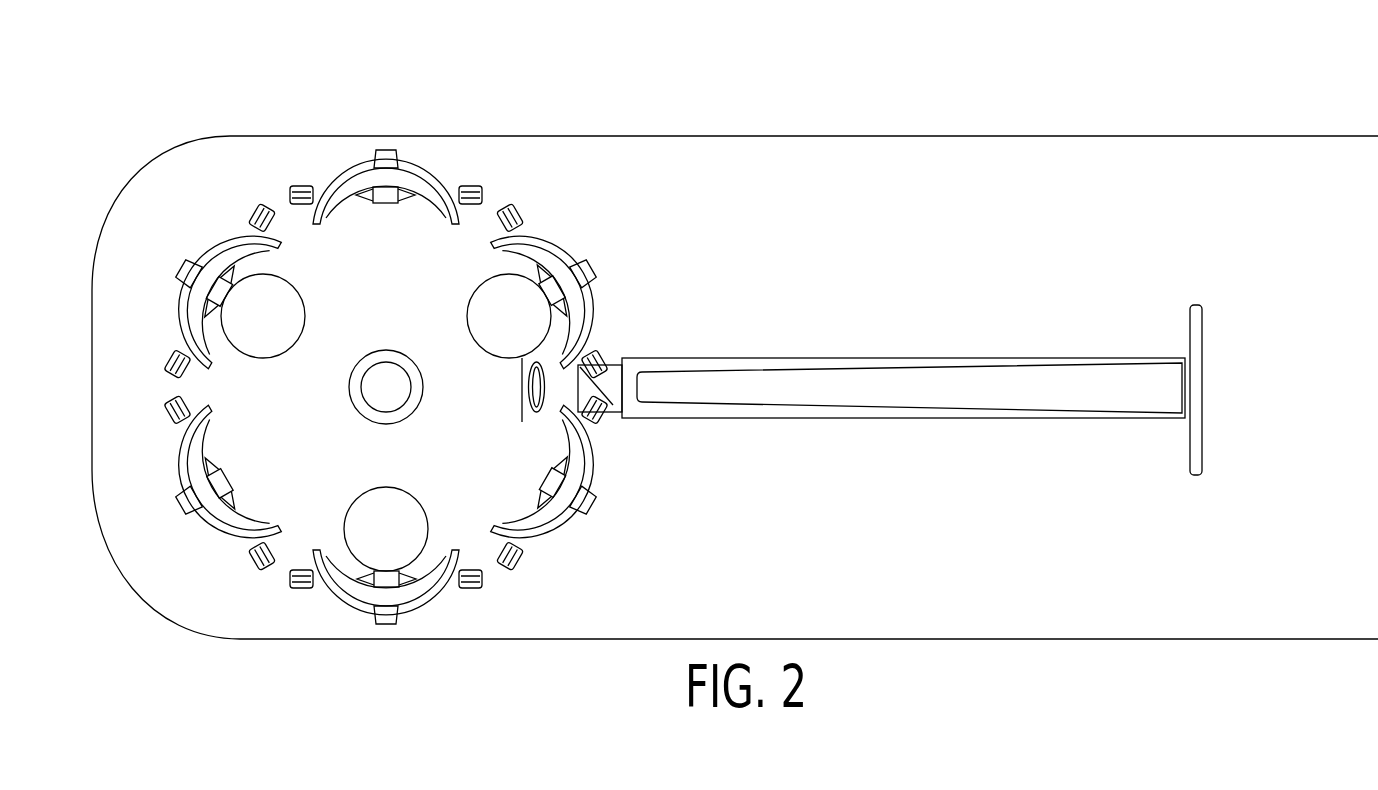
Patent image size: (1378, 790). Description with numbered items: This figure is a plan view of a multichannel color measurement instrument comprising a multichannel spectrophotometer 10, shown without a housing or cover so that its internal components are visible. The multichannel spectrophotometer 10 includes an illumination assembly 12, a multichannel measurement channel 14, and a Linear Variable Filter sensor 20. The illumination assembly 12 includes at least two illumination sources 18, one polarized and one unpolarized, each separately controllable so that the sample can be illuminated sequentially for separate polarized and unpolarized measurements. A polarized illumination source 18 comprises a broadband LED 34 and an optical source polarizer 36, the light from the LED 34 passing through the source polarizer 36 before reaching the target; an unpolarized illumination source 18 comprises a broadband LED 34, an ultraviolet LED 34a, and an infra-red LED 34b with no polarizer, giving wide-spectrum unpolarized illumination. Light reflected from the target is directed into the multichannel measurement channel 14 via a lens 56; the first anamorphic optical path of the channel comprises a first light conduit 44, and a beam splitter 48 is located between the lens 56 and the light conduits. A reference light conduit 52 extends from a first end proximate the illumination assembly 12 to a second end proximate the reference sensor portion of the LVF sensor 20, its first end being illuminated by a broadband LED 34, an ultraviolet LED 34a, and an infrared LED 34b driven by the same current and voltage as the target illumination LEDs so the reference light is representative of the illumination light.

The multichannel spectrophotometer 10 is at (1003, 124).
The illumination assembly 12 is at (391, 123).
The multichannel measurement channel 14 is at (912, 383).
The illumination source 18 is at (592, 300).
The LVF sensor 20 is at (1188, 423).
The broadband LED 34 is at (209, 395).
The ultraviolet LED 34a is at (223, 490).
The infra-red LED 34b is at (223, 490).
The optical source polarizer 36 is at (417, 503).
The first light conduit 44 is at (1025, 403).
The beam splitter 48 is at (600, 408).
The reference light conduit 52 is at (694, 358).
The lens 56 is at (538, 412).